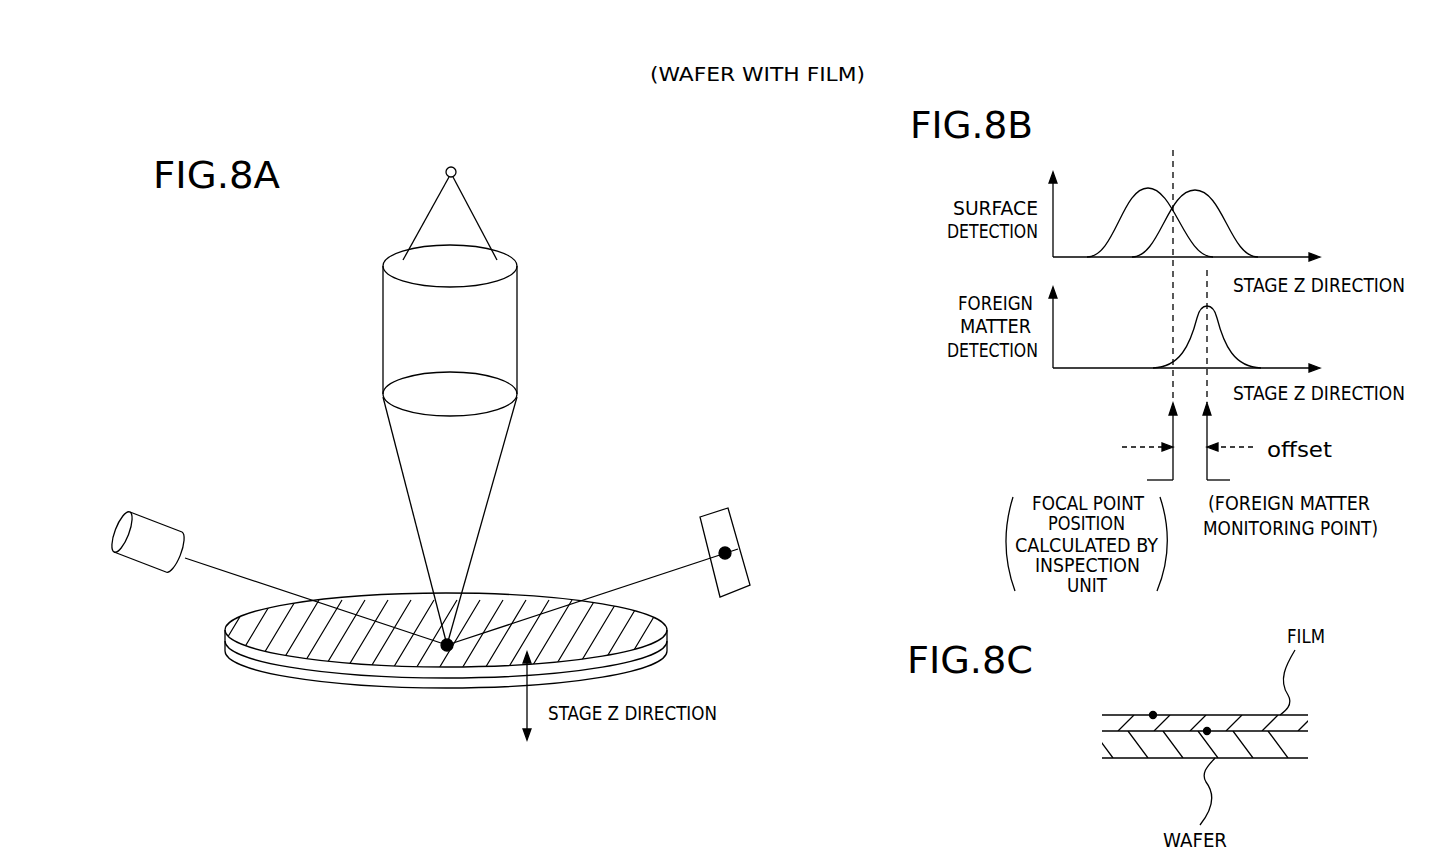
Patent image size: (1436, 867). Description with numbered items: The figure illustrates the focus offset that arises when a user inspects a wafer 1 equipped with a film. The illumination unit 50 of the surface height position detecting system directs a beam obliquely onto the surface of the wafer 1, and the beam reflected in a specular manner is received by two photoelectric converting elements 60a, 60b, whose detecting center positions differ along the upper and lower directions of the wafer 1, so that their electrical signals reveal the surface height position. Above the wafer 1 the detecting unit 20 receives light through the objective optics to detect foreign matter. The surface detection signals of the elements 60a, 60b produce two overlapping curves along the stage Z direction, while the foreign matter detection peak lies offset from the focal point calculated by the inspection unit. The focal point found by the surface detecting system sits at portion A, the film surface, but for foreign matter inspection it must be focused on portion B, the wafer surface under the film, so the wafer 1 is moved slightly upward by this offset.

In FIG. 8A, the detecting unit 20 is at (462, 192).
In FIG. 8A, the illumination unit 50 is at (155, 517).
In FIG. 8A, the semiconductor wafer 1 is at (308, 650).
In FIG. 8A, the photoelectric converting element 60a is at (728, 524).
In FIG. 8B, the photoelectric converting element 60a is at (1122, 200).
In FIG. 8A, the photoelectric converting element 60b is at (740, 572).
In FIG. 8B, the photoelectric converting element 60b is at (1222, 200).
In FIG. 8C, the portion A (surface of film) A is at (1153, 715).
In FIG. 8C, the portion B (wafer surface under film) B is at (1207, 731).